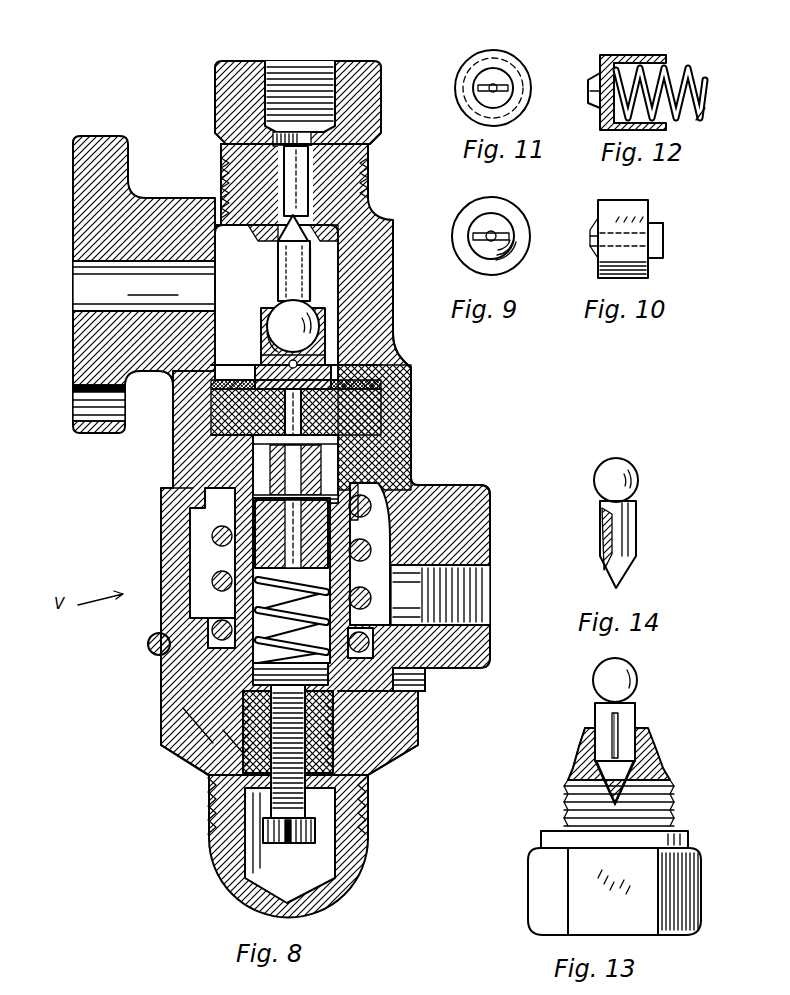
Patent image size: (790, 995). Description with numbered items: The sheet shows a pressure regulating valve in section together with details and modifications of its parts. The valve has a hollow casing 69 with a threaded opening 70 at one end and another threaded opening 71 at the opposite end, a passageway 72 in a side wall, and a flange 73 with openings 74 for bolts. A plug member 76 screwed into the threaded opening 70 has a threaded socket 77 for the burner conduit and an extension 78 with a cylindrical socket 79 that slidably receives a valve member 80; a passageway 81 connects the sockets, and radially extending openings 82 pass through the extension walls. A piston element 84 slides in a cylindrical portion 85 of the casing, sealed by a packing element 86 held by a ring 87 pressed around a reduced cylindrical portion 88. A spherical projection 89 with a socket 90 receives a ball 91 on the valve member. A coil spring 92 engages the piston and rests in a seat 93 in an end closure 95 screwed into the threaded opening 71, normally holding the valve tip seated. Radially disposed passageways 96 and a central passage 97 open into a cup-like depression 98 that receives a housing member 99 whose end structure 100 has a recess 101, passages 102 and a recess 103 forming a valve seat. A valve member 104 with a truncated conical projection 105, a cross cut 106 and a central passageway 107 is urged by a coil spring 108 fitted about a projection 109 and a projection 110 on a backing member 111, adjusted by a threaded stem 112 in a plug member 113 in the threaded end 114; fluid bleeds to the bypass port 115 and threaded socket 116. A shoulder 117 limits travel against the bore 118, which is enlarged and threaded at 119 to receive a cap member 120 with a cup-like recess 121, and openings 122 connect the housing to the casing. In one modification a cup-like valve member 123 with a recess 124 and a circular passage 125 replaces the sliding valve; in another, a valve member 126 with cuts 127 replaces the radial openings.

In FIG. 8, the casing 69 is at (405, 403).
In FIG. 8, the threaded opening 70 is at (364, 186).
In FIG. 8, the threaded opening 71 is at (148, 635).
In FIG. 8, the passageway 72 is at (82, 298).
In FIG. 8, the flange 73 is at (85, 418).
In FIG. 8, the openings 74 is at (75, 400).
In FIG. 8, the plug member 76 is at (367, 53).
In FIG. 13, the plug member 76 is at (532, 867).
In FIG. 8, the threaded socket 77 is at (262, 57).
In FIG. 8, the extension 78 is at (313, 247).
In FIG. 13, the extension 78 is at (640, 726).
In FIG. 8, the cylindrical socket 79 is at (268, 261).
In FIG. 13, the cylindrical socket 79 is at (577, 731).
In FIG. 8, the valve member 80 is at (304, 280).
In FIG. 8, the passageway 81 is at (305, 160).
In FIG. 8, the radially extending openings 82 is at (247, 222).
In FIG. 8, the piston element 84 is at (400, 380).
In FIG. 8, the cylindrical portion 85 is at (286, 206).
In FIG. 8, the packing element 86 is at (392, 377).
In FIG. 8, the ring 87 is at (352, 372).
In FIG. 8, the reduced cylindrical portion 88 is at (326, 360).
In FIG. 8, the spherical projection 89 is at (318, 321).
In FIG. 8, the socket 90 is at (260, 323).
In FIG. 8, the ball 91 is at (263, 307).
In FIG. 14, the ball 91 is at (625, 460).
In FIG. 13, the ball 91 is at (596, 666).
In FIG. 8, the coil spring 92 is at (212, 568).
In FIG. 8, the seat 93 is at (370, 594).
In FIG. 8, the end closure 95 is at (412, 720).
In FIG. 8, the radially disposed passageways 96 is at (280, 355).
In FIG. 8, the central passage 97 is at (284, 396).
In FIG. 8, the cup-like depression 98 is at (214, 413).
In FIG. 8, the housing member 99 is at (167, 516).
In FIG. 8, the end structure 100 is at (212, 469).
In FIG. 8, the recess 101 is at (385, 419).
In FIG. 8, the passages 102 is at (312, 463).
In FIG. 8, the recess 103 is at (320, 481).
In FIG. 8, the valve member 104 is at (217, 583).
In FIG. 9, the valve member 104 is at (447, 229).
In FIG. 10, the valve member 104 is at (608, 196).
In FIG. 9, the truncated conical projection 105 is at (496, 252).
In FIG. 10, the truncated conical projection 105 is at (586, 244).
In FIG. 9, the cross cut 106 is at (500, 221).
In FIG. 10, the cross cut 106 is at (582, 229).
In FIG. 8, the central passageway 107 is at (341, 512).
In FIG. 9, the central passageway 107 is at (483, 223).
In FIG. 10, the central passageway 107 is at (640, 216).
In FIG. 8, the coil spring 108 is at (346, 556).
In FIG. 12, the coil spring 108 is at (690, 63).
In FIG. 10, the projection 109 is at (652, 250).
In FIG. 8, the projection 110 is at (400, 671).
In FIG. 8, the backing member 111 is at (395, 684).
In FIG. 8, the threaded stem 112 is at (300, 782).
In FIG. 8, the plug member 113 is at (393, 745).
In FIG. 8, the threaded end 114 is at (410, 697).
In FIG. 8, the bypass port 115 is at (404, 582).
In FIG. 8, the threaded socket 116 is at (478, 613).
In FIG. 8, the shoulder 117 is at (163, 690).
In FIG. 8, the bore 118 is at (226, 737).
In FIG. 8, the enlarged threaded bore portion 119 is at (205, 804).
In FIG. 8, the cap member 120 is at (203, 878).
In FIG. 8, the cup-like recess 121 is at (326, 854).
In FIG. 8, the openings 122 is at (452, 510).
In FIG. 11, the cup-like valve member 123 is at (518, 52).
In FIG. 12, the cup-like valve member 123 is at (646, 41).
In FIG. 12, the recess 124 is at (680, 112).
In FIG. 11, the circular passage 125 is at (483, 78).
In FIG. 12, the circular passage 125 is at (584, 98).
In FIG. 14, the valve member 126 is at (620, 529).
In FIG. 13, the valve member 126 is at (587, 704).
In FIG. 14, the cuts 127 is at (595, 529).
In FIG. 13, the cuts 127 is at (612, 714).